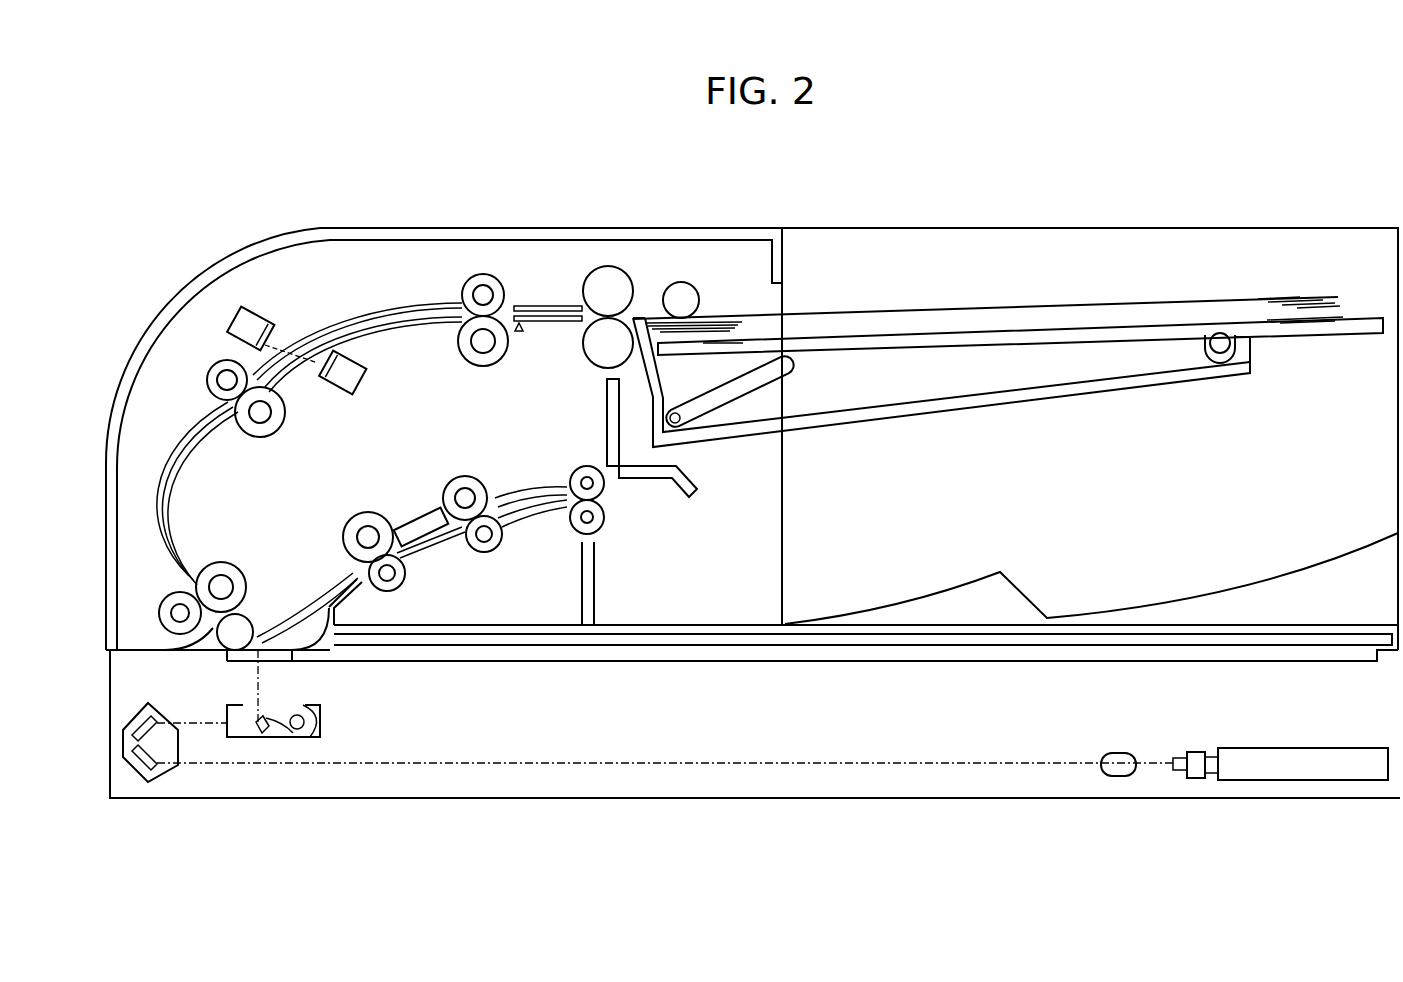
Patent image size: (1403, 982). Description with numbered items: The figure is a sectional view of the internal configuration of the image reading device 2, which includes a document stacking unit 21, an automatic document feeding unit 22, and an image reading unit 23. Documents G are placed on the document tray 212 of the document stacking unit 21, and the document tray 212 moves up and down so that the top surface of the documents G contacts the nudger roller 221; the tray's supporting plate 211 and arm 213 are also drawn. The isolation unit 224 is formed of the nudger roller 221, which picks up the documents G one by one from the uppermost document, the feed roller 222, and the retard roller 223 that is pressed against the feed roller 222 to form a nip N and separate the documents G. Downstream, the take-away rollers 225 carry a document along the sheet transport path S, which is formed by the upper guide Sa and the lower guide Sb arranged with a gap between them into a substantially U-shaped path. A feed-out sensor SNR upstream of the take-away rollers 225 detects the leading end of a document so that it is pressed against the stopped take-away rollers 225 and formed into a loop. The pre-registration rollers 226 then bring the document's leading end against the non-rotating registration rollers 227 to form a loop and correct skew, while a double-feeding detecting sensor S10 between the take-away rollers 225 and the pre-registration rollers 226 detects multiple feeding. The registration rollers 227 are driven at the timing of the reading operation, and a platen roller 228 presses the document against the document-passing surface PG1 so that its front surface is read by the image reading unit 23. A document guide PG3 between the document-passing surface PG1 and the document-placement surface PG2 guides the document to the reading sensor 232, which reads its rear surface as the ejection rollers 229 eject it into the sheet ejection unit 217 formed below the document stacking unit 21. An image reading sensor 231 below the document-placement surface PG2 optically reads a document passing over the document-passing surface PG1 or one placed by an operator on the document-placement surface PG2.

The image reading device 2 is at (172, 243).
The document stacking unit 21 is at (892, 297).
The automatic document feeding unit 22 is at (444, 426).
The image reading unit 23 is at (303, 698).
The document tray lower plate 211 is at (965, 402).
The document tray 212 is at (1045, 339).
The lifting arm 213 is at (658, 385).
The sheet ejection unit 217 is at (1177, 612).
The nudger roller 221 is at (678, 291).
The feed roller 222 is at (607, 283).
The retard roller 223 is at (602, 342).
The isolation unit 224 is at (576, 283).
The take-away rollers 225 is at (460, 277).
The pre-registration rollers 226 is at (204, 400).
The registration rollers 227 is at (197, 563).
The platen roller 228 is at (233, 630).
The ejection rollers 229 is at (612, 503).
The image reading sensor 231 is at (1197, 760).
The reading sensor 232 is at (430, 525).
The sheet transport path S is at (410, 308).
The upper guide Sa is at (369, 316).
The lower guide Sb is at (392, 330).
The double-feeding detecting sensor S10 is at (283, 318).
The feed-out sensor SNR is at (537, 343).
The nip N is at (623, 317).
The documents G is at (988, 318).
The document-passing surface PG1 is at (232, 652).
The document-placement surface PG2 is at (666, 652).
The document guide PG3 is at (355, 608).